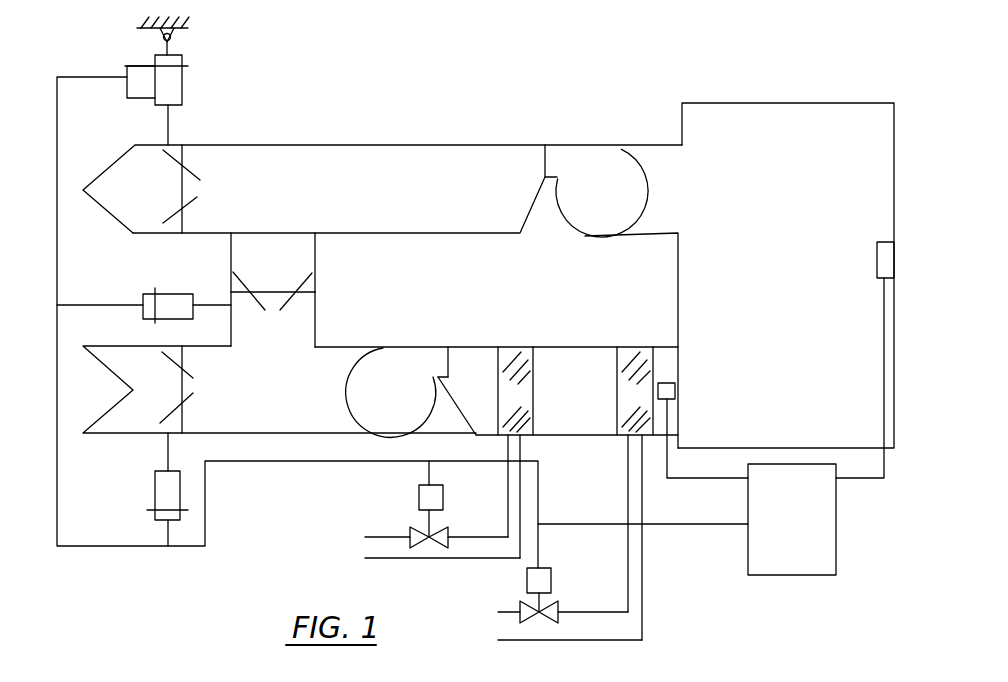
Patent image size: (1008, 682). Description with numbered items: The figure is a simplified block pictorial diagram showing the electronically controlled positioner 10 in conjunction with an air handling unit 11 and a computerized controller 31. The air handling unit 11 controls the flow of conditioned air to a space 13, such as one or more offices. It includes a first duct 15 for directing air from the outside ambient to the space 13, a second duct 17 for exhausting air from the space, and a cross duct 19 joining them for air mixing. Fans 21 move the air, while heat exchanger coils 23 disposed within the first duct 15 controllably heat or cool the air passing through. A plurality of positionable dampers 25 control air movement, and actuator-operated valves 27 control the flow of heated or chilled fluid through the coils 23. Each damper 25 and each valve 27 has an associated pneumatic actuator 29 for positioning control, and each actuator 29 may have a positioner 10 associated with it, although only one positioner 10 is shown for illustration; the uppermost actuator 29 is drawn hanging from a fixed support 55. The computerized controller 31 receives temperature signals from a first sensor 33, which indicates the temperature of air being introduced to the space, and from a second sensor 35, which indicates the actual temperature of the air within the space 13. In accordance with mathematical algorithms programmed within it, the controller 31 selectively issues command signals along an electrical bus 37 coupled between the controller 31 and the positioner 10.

The electronically controlled positioner 10 is at (136, 98).
The air handling unit 11 is at (518, 305).
The space 13 is at (781, 289).
The first duct 15 is at (279, 389).
The second duct 17 is at (370, 196).
The cross duct 19 is at (290, 283).
The fans 21 is at (614, 199).
The heat exchanger coils 23 is at (617, 362).
The positionable dampers 25 is at (200, 172).
The actuator-operated valves 27 is at (432, 534).
The pneumatic actuator 29 is at (182, 92).
The computerized controller 31 is at (798, 531).
The first sensor 33 is at (676, 391).
The second sensor 35 is at (877, 250).
The electrical bus 37 is at (57, 341).
The fixed support 55 is at (190, 20).